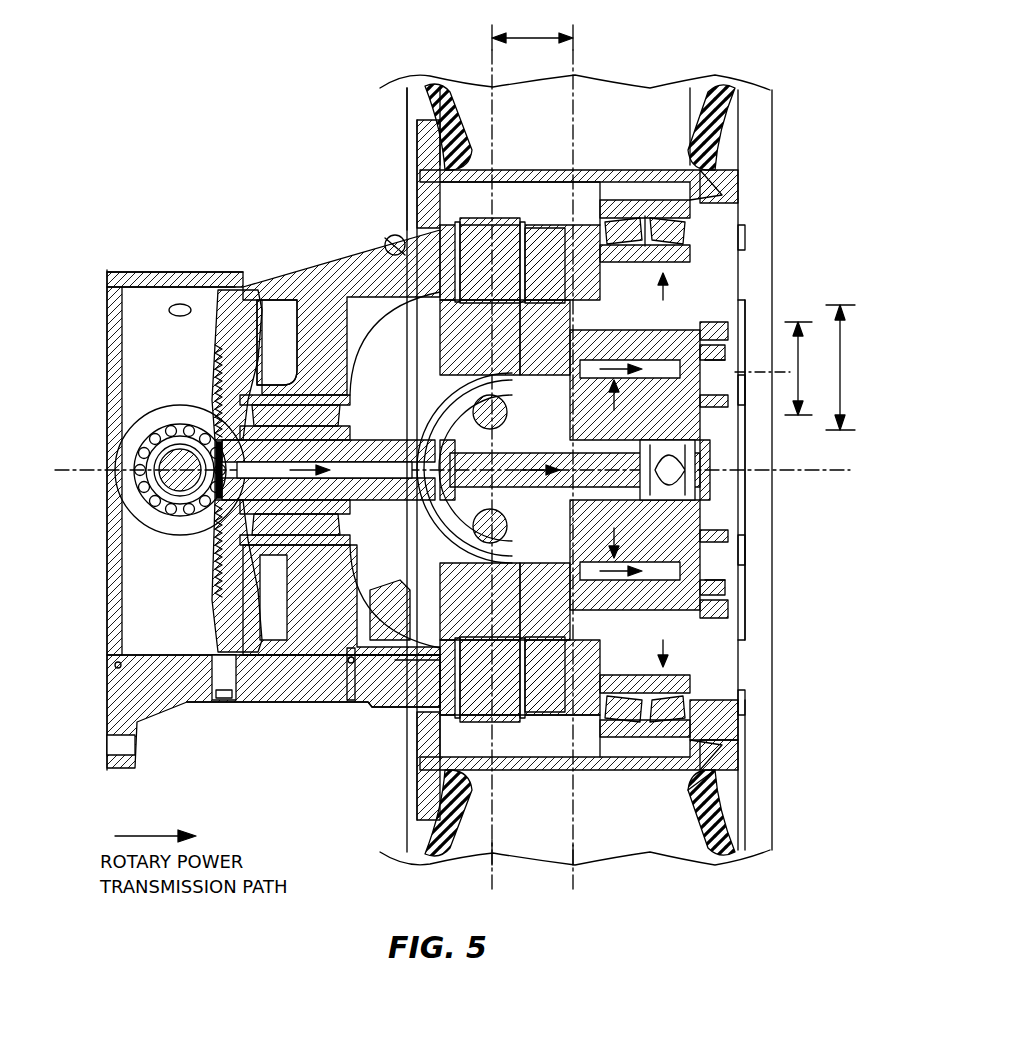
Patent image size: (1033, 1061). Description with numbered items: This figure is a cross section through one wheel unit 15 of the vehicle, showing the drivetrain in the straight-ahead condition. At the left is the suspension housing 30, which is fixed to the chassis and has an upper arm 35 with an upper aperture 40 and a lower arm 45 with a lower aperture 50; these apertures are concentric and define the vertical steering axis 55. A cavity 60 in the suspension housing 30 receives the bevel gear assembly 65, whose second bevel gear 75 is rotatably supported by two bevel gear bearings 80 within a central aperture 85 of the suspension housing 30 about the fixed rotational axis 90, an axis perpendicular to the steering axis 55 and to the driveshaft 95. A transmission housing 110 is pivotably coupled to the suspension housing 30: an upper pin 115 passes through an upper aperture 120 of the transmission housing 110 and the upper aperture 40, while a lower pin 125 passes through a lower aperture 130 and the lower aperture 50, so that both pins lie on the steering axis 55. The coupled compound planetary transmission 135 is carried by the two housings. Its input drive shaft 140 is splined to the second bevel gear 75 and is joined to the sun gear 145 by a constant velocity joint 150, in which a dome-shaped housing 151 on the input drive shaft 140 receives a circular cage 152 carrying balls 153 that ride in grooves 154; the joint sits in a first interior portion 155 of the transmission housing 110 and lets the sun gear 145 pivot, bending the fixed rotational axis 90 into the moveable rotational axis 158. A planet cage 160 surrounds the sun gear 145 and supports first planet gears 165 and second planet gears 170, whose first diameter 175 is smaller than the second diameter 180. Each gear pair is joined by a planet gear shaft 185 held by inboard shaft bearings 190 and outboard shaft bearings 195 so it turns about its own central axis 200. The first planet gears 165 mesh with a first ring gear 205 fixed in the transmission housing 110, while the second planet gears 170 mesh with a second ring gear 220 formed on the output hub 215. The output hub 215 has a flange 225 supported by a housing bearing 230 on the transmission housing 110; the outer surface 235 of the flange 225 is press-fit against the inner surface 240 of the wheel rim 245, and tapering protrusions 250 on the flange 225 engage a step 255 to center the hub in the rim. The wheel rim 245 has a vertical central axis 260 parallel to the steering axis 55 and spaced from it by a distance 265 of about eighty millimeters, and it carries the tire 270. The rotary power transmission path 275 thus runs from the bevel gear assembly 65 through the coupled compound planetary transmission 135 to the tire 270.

The wheel unit 15 is at (208, 142).
The suspension housing 30 is at (113, 270).
The upper arm 35 is at (400, 240).
The upper aperture 40 is at (440, 180).
The lower arm 45 is at (355, 705).
The lower aperture 50 is at (405, 705).
The steering axis 55 is at (495, 845).
The cavity 60 is at (140, 600).
The bevel gear assembly 65 is at (205, 292).
The second bevel gear 75 is at (270, 530).
The bevel gear bearings 80 is at (265, 680).
The central aperture 85 is at (298, 395).
The fixed rotational axis 90 is at (92, 460).
The driveshaft 95 is at (178, 472).
The transmission housing 110 is at (350, 285).
The upper pin 115 is at (470, 150).
The upper aperture 120 is at (390, 240).
The lower pin 125 is at (420, 770).
The lower aperture 130 is at (335, 690).
The coupled compound planetary transmission 135 is at (780, 660).
The input drive shaft 140 is at (250, 420).
The sun gear 145 is at (700, 510).
The constant velocity joint 150 is at (350, 660).
The dome-shaped housing 151 is at (445, 380).
The circular cage 152 is at (460, 410).
The balls 153 is at (508, 415).
The grooves 154 is at (445, 480).
The first interior portion 155 is at (425, 550).
The moveable rotational axis 158 is at (750, 470).
The planet cage 160 is at (745, 310).
The first planet gears 165 is at (550, 255).
The second planet gears 170 is at (705, 330).
The first diameter 175 is at (773, 368).
The second diameter 180 is at (841, 367).
The planet gear shaft 185 is at (720, 405).
The inboard shaft bearings 190 is at (500, 260).
The outboard shaft bearings 195 is at (718, 345).
The central axis 200 is at (745, 335).
The first ring gear 205 is at (690, 800).
The output hub 215 is at (725, 745).
The second ring gear 220 is at (700, 690).
The flange 225 is at (628, 728).
The housing bearing 230 is at (625, 225).
The outer surface 235 is at (672, 150).
The inner surface 240 is at (720, 170).
The wheel rim 245 is at (512, 172).
The tapering protrusions 250 is at (608, 195).
The step 255 is at (608, 768).
The central axis 260 is at (575, 860).
The distance 265 is at (540, 32).
The tire 270 is at (755, 820).
The rotary power transmission path 275 is at (243, 455).